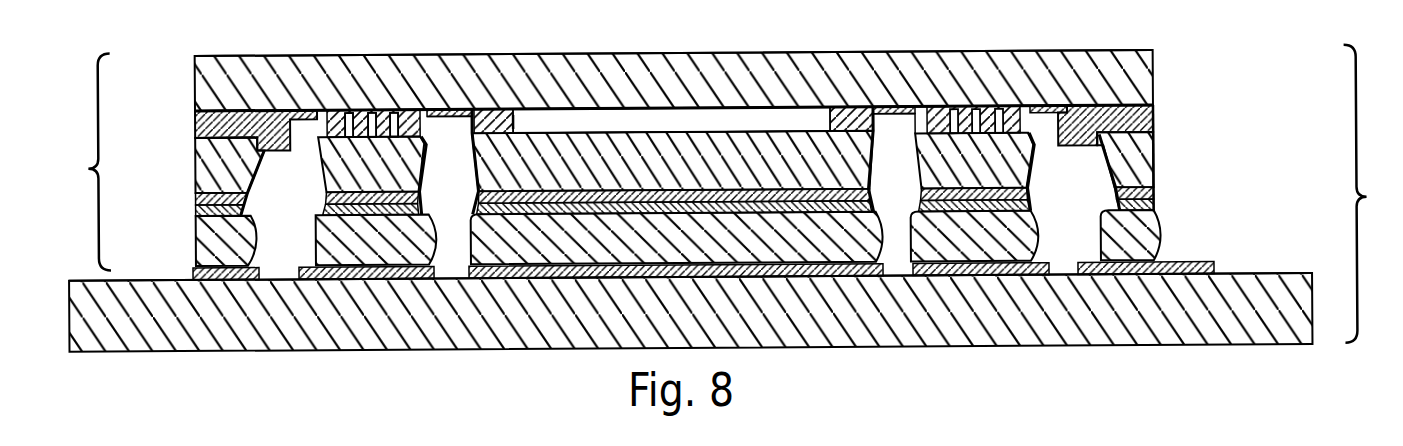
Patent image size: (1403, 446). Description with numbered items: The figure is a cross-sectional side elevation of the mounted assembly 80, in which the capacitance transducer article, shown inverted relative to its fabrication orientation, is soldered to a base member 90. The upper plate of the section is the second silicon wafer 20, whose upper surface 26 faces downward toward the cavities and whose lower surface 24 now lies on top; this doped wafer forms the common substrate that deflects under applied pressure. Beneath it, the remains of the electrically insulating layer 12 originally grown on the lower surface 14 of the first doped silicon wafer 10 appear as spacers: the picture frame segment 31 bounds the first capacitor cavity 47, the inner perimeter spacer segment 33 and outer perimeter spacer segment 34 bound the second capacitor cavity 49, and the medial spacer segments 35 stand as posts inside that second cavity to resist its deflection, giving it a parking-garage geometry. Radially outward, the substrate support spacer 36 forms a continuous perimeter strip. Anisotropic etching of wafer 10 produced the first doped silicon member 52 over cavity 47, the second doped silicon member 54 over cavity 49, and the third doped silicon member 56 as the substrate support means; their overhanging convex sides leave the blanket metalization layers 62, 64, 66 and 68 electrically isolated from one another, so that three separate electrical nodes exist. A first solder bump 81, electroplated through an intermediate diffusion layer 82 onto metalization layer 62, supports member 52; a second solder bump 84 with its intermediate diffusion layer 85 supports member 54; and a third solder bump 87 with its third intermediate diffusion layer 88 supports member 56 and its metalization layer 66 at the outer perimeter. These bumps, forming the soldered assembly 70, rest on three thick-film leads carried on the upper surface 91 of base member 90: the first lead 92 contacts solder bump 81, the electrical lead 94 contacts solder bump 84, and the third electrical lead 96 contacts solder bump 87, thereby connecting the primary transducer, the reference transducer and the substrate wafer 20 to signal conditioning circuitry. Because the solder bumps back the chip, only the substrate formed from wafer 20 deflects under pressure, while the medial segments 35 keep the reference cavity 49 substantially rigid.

The first doped silicon wafer 10 is at (1153, 144).
The electrically insulating layer 12 is at (195, 125).
The lower surface 14 is at (690, 134).
The second silicon wafer 20 is at (1153, 63).
The lower surface 24 is at (1057, 56).
The upper surface 26 is at (603, 112).
The picture frame segment 31 is at (514, 126).
The inner perimeter spacer segment 33 is at (457, 110).
The outer perimeter spacer segment 34 is at (338, 110).
The medial electrically insulating cavity area spacer segments 35 is at (382, 110).
The substrate support spacer 36 is at (195, 136).
The first capacitor cavity 47 is at (747, 121).
The second capacitor cavity 49 is at (412, 110).
The first doped silicon member 52 is at (658, 177).
The second doped silicon member 54 is at (318, 139).
The third doped silicon member 56 is at (195, 173).
The metalization layer 62 is at (870, 190).
The metalization layer 64 is at (433, 188).
The metalization layer 66 is at (195, 201).
The metalization layer 68 is at (467, 118).
The soldered assembly 70 is at (78, 162).
The mounted assembly 80 is at (1373, 193).
The first solder bump 81 is at (868, 228).
The intermediate diffusion layer 82 is at (868, 204).
The second solder bump 84 is at (319, 230).
The intermediate diffusion layer 85 is at (321, 204).
The third solder bump 87 is at (192, 236).
The third intermediate diffusion layer 88 is at (195, 209).
The base member 90 is at (1228, 349).
The upper surface 91 is at (1280, 278).
The first lead 92 is at (872, 268).
The electrical lead 94 is at (433, 267).
The third electrical lead 96 is at (255, 270).